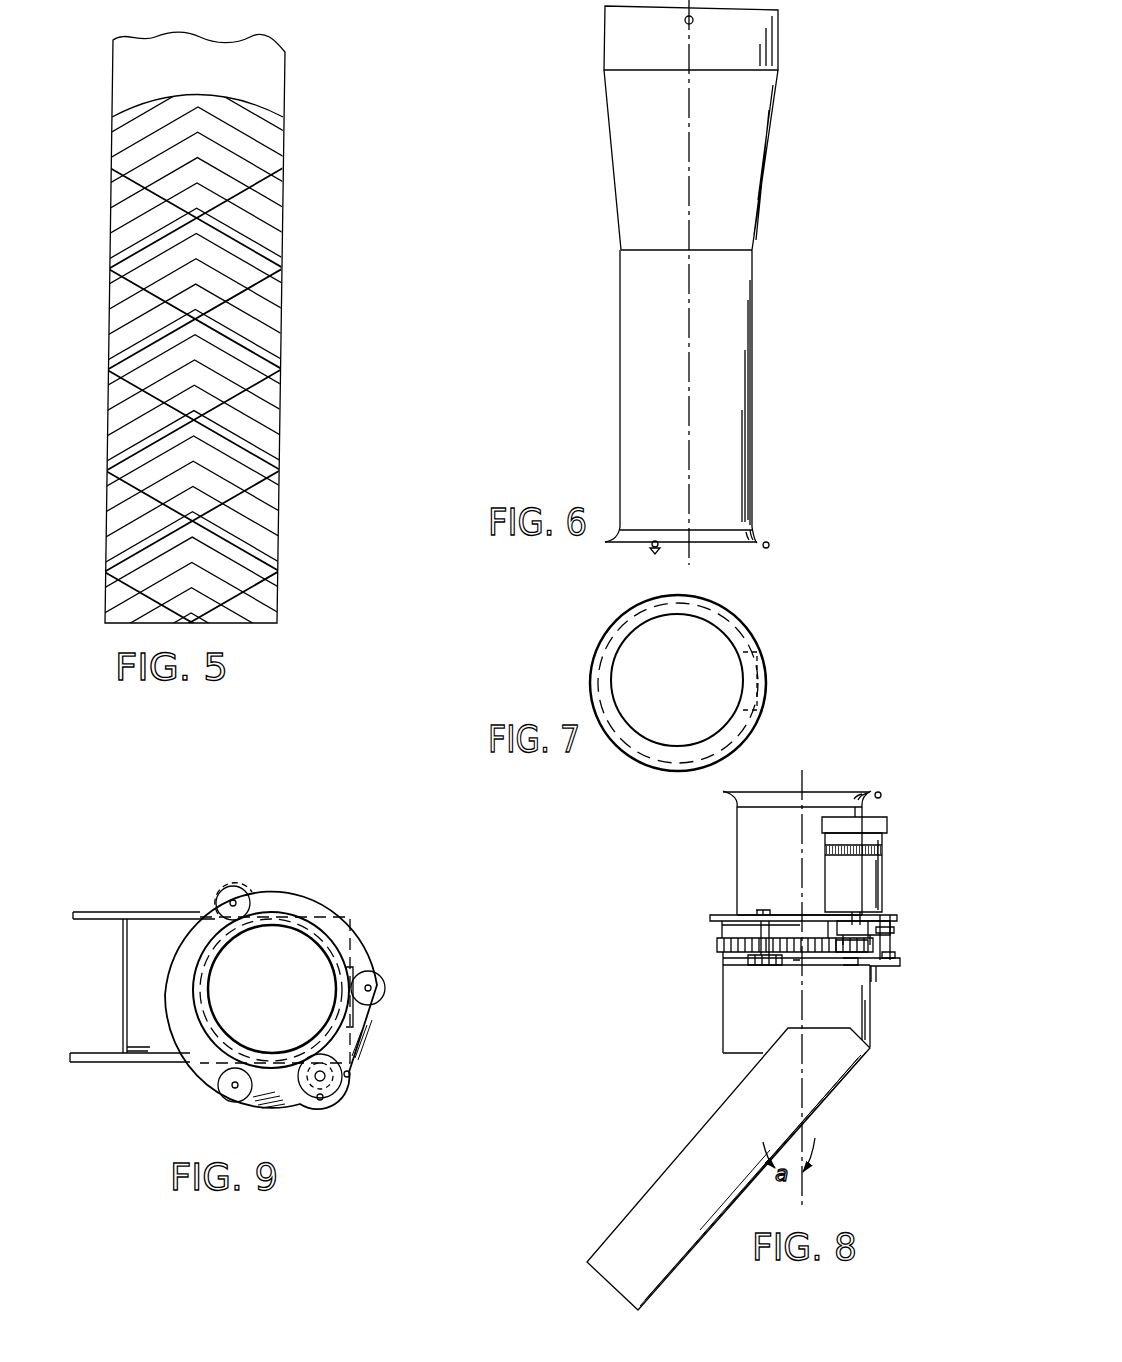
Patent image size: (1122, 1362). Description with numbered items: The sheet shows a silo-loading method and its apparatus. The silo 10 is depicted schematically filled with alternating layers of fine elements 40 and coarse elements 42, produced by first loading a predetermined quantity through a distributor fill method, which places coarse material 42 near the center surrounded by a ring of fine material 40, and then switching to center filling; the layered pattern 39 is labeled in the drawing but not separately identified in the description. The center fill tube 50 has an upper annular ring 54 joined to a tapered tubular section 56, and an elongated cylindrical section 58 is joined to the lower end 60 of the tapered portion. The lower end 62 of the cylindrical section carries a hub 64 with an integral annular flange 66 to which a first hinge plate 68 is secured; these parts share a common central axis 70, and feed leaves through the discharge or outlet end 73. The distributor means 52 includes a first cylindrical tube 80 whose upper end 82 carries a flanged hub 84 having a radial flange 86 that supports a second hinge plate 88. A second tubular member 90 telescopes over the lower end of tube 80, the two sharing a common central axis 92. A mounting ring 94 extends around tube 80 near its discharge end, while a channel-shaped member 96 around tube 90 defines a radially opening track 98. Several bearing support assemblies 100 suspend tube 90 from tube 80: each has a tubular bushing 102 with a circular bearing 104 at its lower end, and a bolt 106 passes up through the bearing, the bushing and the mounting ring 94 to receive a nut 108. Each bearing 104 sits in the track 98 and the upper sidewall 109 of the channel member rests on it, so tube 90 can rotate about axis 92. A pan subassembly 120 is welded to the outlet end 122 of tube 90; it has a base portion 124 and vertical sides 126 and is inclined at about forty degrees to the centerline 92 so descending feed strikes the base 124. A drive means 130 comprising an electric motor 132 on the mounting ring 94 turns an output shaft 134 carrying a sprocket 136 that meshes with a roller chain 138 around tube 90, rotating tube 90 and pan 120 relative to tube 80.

In FIG. 5, the silo 10 is at (296, 133).
In FIG. 5, the braided reinforcement 39 is at (278, 258).
In FIG. 5, the fine elements 40 is at (233, 512).
In FIG. 5, the coarse elements 42 is at (233, 538).
In FIG. 6, the center fill tube 50 is at (800, 132).
In FIG. 7, the center fill tube 50 is at (598, 629).
In FIG. 6, the upper annular ring 54 is at (777, 40).
In FIG. 6, the tapered tubular section 56 is at (637, 152).
In FIG. 6, the elongated cylindrical section 58 is at (740, 371).
In FIG. 6, the lower end 60 is at (748, 250).
In FIG. 6, the lower end 62 is at (723, 530).
In FIG. 6, the hub 64 is at (728, 538).
In FIG. 6, the annular flange 66 is at (757, 546).
In FIG. 7, the annular flange 66 is at (740, 740).
In FIG. 6, the first hinge plate 68 is at (772, 546).
In FIG. 7, the first hinge plate 68 is at (758, 680).
In FIG. 6, the central axis 70 is at (688, 302).
In FIG. 6, the discharge or outlet end 73 is at (658, 556).
In FIG. 8, the distributor means 52 is at (638, 942).
In FIG. 9, the distributor means 52 is at (289, 852).
In FIG. 8, the first generally cylindrical tube 80 is at (742, 842).
In FIG. 8, the upper end 82 is at (736, 811).
In FIG. 8, the flanged hub 84 is at (829, 793).
In FIG. 8, the radial flange 86 is at (869, 791).
In FIG. 8, the second hinge plate 88 is at (881, 797).
In FIG. 8, the second generally cylindrical tubular member 90 is at (741, 1021).
In FIG. 8, the common central axis 92 is at (806, 776).
In FIG. 8, the mounting ring 94 is at (722, 915).
In FIG. 8, the channel-shaped member 96 is at (743, 967).
In FIG. 8, the radially opening track 98 is at (722, 958).
In FIG. 8, the bearing support assemblies 100 is at (904, 939).
In FIG. 9, the bearing support assemblies 100 is at (228, 877).
In FIG. 8, the tubular bushing 102 is at (898, 950).
In FIG. 8, the circular bearing 104 is at (894, 968).
In FIG. 8, the bolt 106 is at (874, 968).
In FIG. 8, the nut 108 is at (882, 915).
In FIG. 8, the upper sidewall 109 is at (719, 955).
In FIG. 8, the distributor plate or pan subassembly 120 is at (647, 1173).
In FIG. 8, the discharge or outlet end 122 is at (728, 1056).
In FIG. 9, the base portion 124 is at (137, 930).
In FIG. 9, the vertical sides 126 is at (102, 911).
In FIG. 8, the drive means 130 is at (893, 851).
In FIG. 8, the electric motor 132 is at (835, 871).
In FIG. 8, the output shaft 134 is at (854, 921).
In FIG. 8, the gear or sprocket 136 is at (843, 958).
In FIG. 8, the roller chain 138 is at (792, 962).